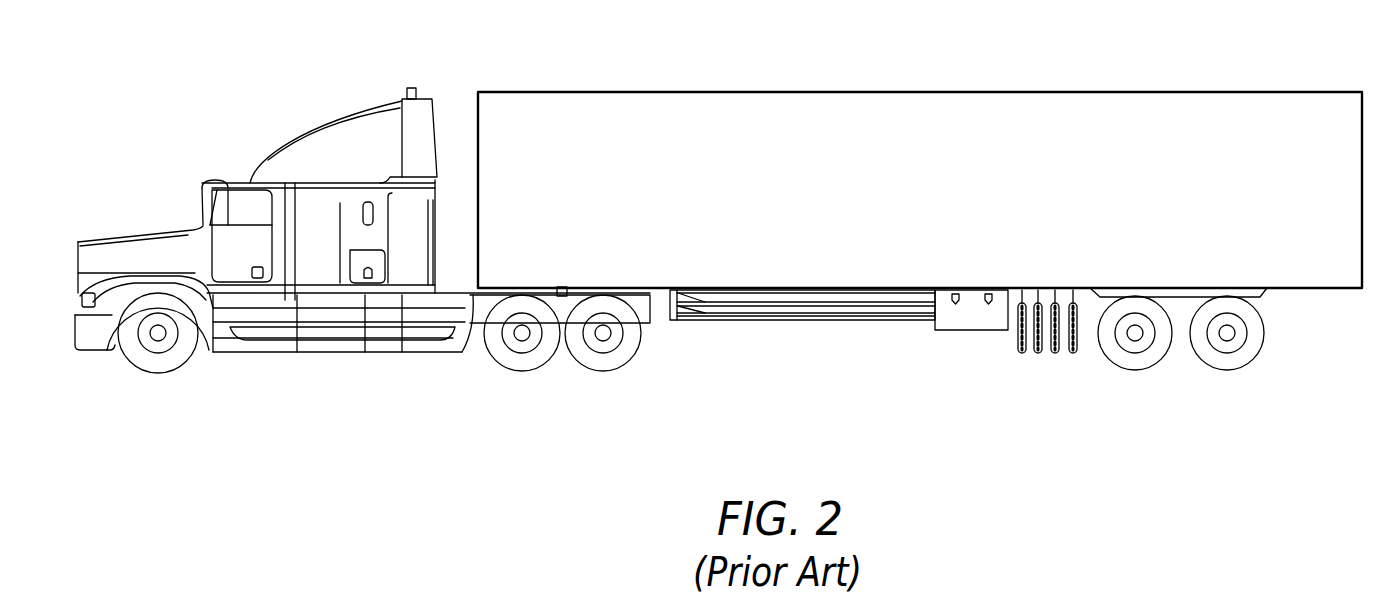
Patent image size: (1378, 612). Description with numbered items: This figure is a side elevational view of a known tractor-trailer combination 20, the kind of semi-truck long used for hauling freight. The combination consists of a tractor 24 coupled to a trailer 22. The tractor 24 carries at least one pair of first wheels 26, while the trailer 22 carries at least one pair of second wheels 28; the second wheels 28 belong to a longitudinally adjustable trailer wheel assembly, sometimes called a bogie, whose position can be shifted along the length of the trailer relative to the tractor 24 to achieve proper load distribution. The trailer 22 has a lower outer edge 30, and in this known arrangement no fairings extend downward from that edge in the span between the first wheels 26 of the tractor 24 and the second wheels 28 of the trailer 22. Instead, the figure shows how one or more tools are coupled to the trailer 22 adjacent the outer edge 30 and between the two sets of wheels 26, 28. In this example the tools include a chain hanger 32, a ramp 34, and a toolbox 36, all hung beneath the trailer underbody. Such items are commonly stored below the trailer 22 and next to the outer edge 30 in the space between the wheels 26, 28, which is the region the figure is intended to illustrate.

The tractor-trailer combination 20 is at (460, 84).
The trailer 22 is at (920, 82).
The tractor 24 is at (191, 177).
The first wheels 26 is at (643, 380).
The second wheels 28 is at (1257, 378).
The lower outer edge 30 is at (660, 290).
The chain hanger 32 is at (1038, 353).
The ramp 34 is at (752, 303).
The toolbox 36 is at (953, 318).